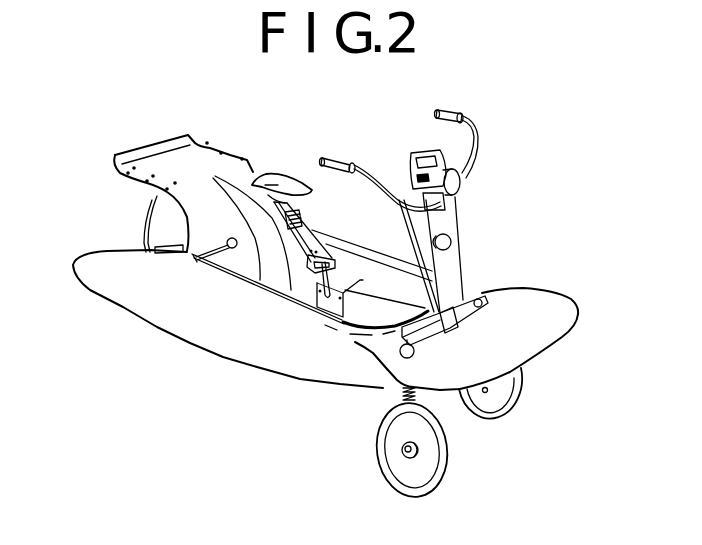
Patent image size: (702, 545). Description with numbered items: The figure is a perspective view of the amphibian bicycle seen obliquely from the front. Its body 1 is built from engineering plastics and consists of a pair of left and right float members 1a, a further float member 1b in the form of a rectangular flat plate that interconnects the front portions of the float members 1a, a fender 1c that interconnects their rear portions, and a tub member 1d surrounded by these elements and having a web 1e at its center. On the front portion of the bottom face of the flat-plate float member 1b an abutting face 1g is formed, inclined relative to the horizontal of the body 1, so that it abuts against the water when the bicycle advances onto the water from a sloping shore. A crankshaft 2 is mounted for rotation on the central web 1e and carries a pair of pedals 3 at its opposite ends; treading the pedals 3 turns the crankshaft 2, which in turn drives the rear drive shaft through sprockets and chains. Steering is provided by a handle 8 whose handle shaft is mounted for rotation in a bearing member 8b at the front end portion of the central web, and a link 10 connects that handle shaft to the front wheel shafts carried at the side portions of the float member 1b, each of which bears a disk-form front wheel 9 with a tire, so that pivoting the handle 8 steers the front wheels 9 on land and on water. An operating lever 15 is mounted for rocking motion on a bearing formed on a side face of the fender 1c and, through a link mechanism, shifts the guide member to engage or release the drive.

The body 1 is at (325, 253).
The float members 1a is at (210, 333).
The float member 1b is at (532, 306).
The fender 1c is at (225, 162).
The tub member 1d is at (348, 258).
The web 1e is at (377, 293).
The abutting face 1g is at (532, 351).
The crankshaft 2 is at (338, 324).
The pedals 3 is at (287, 283).
The handle 8 is at (472, 147).
The bearing member 8b is at (447, 274).
The front wheel 9 is at (432, 487).
The link 10 is at (438, 330).
The operating lever 15 is at (200, 256).